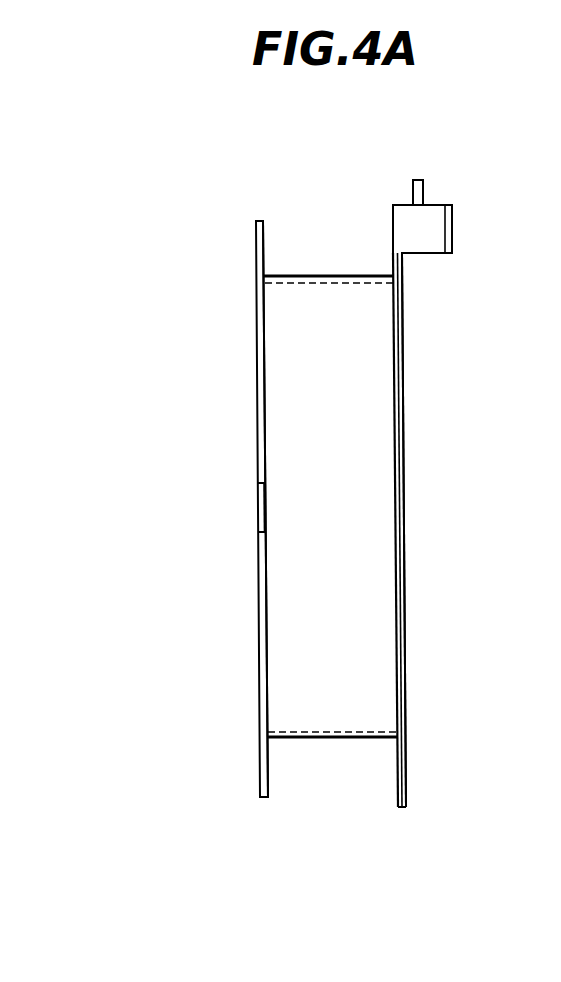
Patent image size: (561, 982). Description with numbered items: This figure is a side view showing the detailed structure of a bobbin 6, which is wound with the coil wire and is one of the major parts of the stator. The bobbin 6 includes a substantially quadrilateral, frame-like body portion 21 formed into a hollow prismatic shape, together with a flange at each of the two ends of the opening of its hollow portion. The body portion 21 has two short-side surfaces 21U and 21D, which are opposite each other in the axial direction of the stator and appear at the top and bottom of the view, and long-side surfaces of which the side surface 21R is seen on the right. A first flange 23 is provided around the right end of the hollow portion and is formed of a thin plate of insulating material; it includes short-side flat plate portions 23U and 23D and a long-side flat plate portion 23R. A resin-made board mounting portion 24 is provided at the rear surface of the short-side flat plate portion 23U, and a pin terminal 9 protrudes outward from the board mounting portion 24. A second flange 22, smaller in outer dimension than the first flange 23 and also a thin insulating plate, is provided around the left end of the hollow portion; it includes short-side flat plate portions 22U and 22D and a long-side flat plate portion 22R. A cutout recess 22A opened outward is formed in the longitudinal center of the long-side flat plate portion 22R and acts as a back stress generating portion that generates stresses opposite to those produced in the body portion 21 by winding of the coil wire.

The bobbin 6 is at (329, 486).
The pin terminal 9 is at (418, 191).
The body portion 21 is at (327, 482).
The side surface 21U is at (295, 276).
The side surface 21D is at (303, 738).
The side surface 21R is at (373, 412).
The second flange 22 is at (202, 507).
The short-side flat plate portion 22U is at (255, 234).
The recess 22A is at (257, 508).
The long-side flat plate portion 22R is at (258, 583).
The short-side flat plate portion 22D is at (258, 780).
The first flange 23 is at (412, 483).
The short-side flat plate portion 23U is at (393, 213).
The long-side flat plate portion 23R is at (405, 667).
The short-side flat plate portion 23D is at (405, 770).
The board mounting portion 24 is at (439, 263).